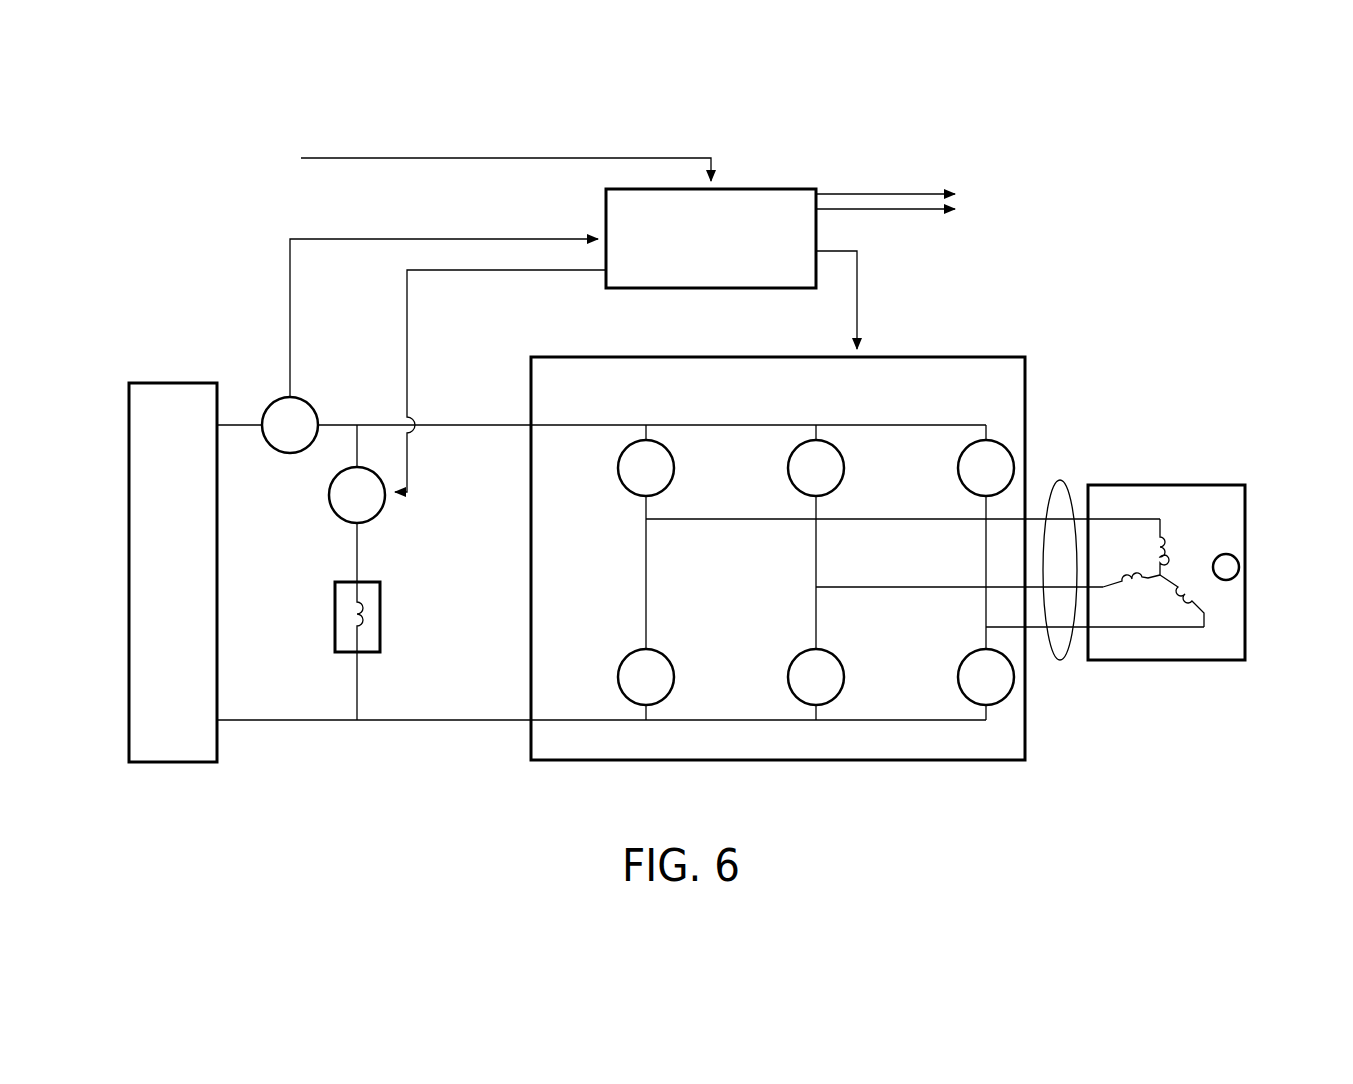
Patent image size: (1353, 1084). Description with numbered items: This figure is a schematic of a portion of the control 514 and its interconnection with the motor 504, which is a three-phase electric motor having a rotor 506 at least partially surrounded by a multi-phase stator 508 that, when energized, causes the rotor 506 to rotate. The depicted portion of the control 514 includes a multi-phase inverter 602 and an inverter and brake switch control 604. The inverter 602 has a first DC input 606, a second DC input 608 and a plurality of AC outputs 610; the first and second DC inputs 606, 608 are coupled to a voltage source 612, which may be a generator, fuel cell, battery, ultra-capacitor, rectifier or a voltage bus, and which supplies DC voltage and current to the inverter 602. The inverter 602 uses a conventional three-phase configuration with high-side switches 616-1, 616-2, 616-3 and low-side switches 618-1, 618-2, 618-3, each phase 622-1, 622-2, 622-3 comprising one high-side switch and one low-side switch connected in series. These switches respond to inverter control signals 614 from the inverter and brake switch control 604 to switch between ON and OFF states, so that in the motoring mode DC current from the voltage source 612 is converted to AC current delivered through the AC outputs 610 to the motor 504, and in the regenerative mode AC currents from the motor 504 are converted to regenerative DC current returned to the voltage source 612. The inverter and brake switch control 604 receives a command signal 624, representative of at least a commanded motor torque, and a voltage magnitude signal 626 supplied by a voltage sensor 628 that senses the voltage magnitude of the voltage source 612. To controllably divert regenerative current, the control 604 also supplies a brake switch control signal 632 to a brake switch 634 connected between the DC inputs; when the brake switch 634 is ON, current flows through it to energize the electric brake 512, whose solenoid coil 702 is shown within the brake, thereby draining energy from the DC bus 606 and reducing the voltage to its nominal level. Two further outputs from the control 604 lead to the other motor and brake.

The multi-phase motor 504 is at (1245, 627).
The rotor 506 is at (1239, 567).
The multi-phase stator 508 is at (1175, 518).
The electric brake 512 is at (335, 606).
The control 514 is at (1150, 252).
The multi-phase inverter 602 is at (545, 357).
The inverter and brake switch control 604 is at (738, 189).
The first DC input 606 is at (458, 425).
The second DC input 608 is at (440, 720).
The AC outputs 610 is at (1062, 480).
The voltage source 612 is at (168, 383).
The inverter control signals 614 is at (864, 304).
The high-side switch 616-1 is at (634, 474).
The high-side switch 616-2 is at (804, 474).
The high-side switch 616-3 is at (974, 474).
The low-side switch 618-1 is at (634, 684).
The low-side switch 618-2 is at (804, 684).
The low-side switch 618-3 is at (974, 684).
The phase 622-1 is at (645, 416).
The phase 622-2 is at (815, 416).
The phase 622-3 is at (985, 416).
The command signal 624 is at (339, 158).
The voltage magnitude signal 626 is at (337, 239).
The voltage sensor 628 is at (268, 402).
The brake switch control signal 632 is at (407, 323).
The brake switch 634 is at (334, 510).
The solenoid coil 702 is at (355, 618).